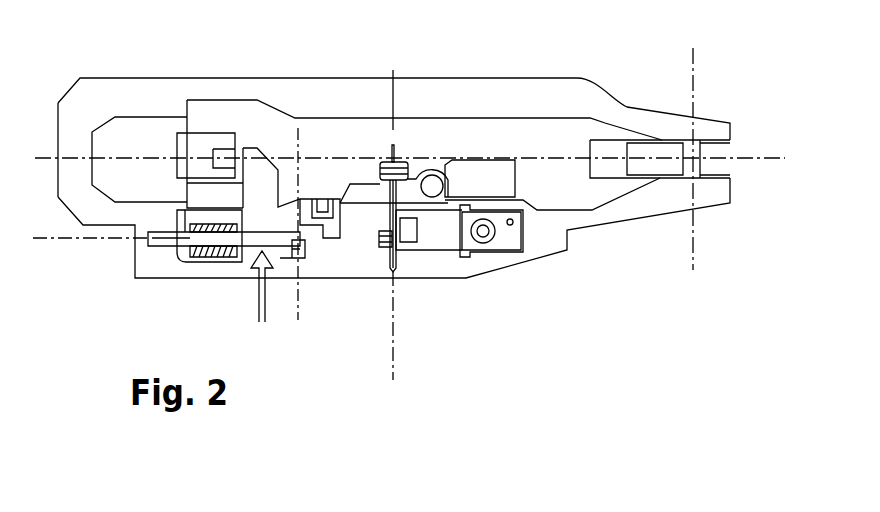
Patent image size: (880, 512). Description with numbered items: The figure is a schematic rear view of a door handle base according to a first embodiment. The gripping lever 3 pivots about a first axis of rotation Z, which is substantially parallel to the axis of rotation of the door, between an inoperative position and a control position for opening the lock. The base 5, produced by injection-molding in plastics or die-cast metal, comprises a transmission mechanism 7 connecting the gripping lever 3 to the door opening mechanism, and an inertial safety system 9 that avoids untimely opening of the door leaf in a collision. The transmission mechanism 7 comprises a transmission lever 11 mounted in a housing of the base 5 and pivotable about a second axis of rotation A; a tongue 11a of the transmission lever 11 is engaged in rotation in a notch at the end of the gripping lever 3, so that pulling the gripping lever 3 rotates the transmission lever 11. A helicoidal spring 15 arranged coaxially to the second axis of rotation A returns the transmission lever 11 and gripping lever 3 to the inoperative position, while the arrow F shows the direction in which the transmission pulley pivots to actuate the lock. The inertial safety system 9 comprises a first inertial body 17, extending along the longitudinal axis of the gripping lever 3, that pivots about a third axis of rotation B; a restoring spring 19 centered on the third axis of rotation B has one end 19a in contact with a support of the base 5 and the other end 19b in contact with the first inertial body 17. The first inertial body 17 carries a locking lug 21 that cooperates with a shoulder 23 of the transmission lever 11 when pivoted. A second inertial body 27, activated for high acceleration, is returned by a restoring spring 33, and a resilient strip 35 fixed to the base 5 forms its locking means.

The gripping lever 3 is at (350, 118).
The base 5 is at (707, 193).
The transmission mechanism 7 is at (174, 189).
The inertial safety system 9 is at (465, 289).
The transmission lever 11 is at (225, 263).
The tongue 11a is at (240, 157).
The helicoidal spring 15 is at (188, 258).
The first inertial body 17 is at (500, 177).
The restoring spring 19 is at (380, 165).
The end of restoring spring 19a is at (407, 167).
The other end of restoring spring 19b is at (430, 168).
The locking lug 21 is at (321, 240).
The shoulder 23 is at (284, 256).
The second inertial body 27 is at (425, 250).
The restoring spring 33 is at (380, 250).
The resilient strip 35 is at (490, 258).
The second axis of rotation A is at (50, 243).
The third axis of rotation B is at (393, 98).
The first axis of rotation Z is at (690, 62).
The arrow F is at (262, 300).